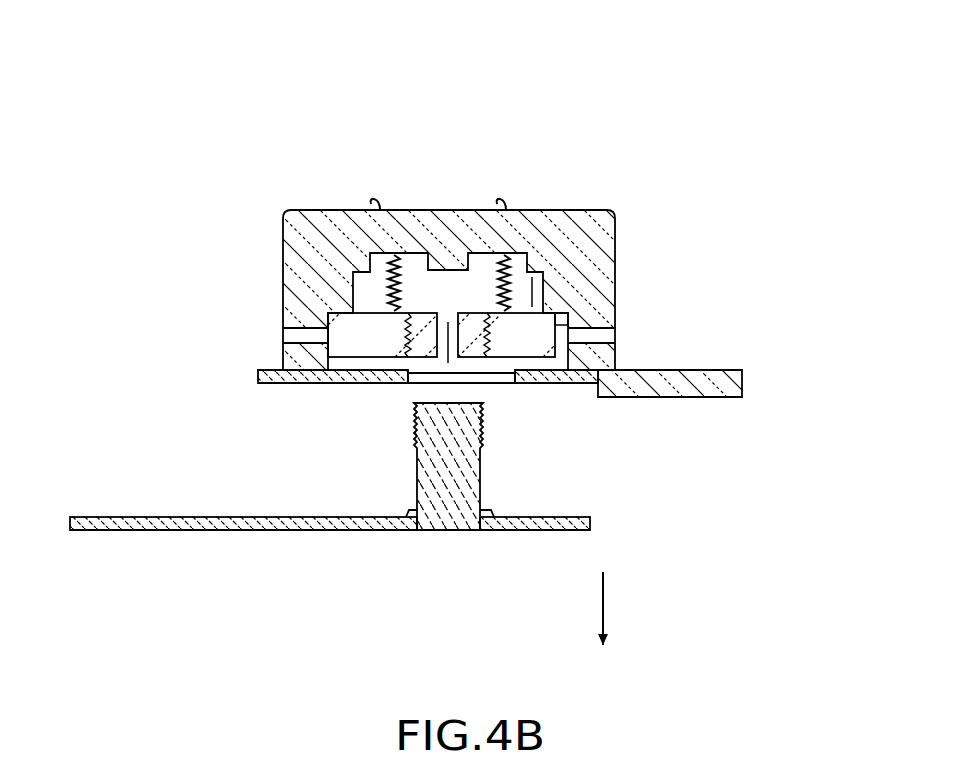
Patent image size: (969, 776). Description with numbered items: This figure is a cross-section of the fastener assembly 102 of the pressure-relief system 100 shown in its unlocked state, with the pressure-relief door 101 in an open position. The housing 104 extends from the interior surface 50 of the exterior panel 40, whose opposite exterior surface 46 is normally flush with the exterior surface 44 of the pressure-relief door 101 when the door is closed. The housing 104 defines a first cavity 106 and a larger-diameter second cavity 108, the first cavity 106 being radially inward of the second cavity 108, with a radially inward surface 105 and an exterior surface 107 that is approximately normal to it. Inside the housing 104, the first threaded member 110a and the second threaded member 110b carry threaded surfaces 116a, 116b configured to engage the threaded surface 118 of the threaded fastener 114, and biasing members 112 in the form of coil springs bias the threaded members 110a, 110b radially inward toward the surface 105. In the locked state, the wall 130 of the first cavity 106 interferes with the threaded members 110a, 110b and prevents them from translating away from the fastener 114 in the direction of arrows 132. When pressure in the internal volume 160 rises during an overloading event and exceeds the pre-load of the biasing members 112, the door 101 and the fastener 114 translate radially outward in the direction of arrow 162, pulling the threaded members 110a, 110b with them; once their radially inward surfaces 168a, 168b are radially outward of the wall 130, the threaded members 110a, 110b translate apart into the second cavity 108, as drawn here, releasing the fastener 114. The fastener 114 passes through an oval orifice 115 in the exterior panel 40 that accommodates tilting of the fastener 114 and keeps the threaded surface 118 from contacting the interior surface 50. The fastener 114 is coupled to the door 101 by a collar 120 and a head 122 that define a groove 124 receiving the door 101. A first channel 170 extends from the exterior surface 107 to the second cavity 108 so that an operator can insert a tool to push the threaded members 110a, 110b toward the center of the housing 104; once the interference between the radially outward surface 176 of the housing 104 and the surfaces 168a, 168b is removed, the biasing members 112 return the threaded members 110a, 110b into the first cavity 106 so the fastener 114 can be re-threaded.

The pressure-relief system 100 is at (168, 132).
The fastener assembly 102 is at (662, 176).
The housing 104 is at (594, 222).
The radially inward surface of housing 105 is at (302, 210).
The first cavity 106 is at (368, 297).
The exterior surface of housing 107 is at (615, 228).
The second cavity 108 is at (272, 316).
The first threaded member 110a is at (500, 346).
The second threaded member 110b is at (352, 346).
The biasing members 112 is at (387, 257).
The threaded fastener 114 is at (432, 481).
The orifice 115 is at (493, 380).
The threaded surface of first threaded member 116a is at (475, 326).
The threaded surface of second threaded member 116b is at (420, 326).
The threaded surface of fastener 118 is at (414, 432).
The collar 120 is at (485, 515).
The head 122 is at (478, 532).
The groove 124 is at (409, 531).
The wall of first cavity 130 is at (545, 312).
The arrows 132 is at (307, 335).
The internal volume 160 is at (150, 206).
The arrow 162 is at (603, 597).
The radially inward surface of first threaded member 168a is at (560, 318).
The radially inward surface of second threaded member 168b is at (383, 307).
The first channel 170 is at (294, 340).
The radially outward surface of housing 176 is at (613, 312).
The exterior panel 40 is at (722, 375).
The exterior surface of pressure-relief door 44 is at (160, 530).
The exterior surface of exterior panel 46 is at (693, 397).
The interior surface of exterior panel 50 is at (683, 370).
The pressure-relief door 101 is at (130, 517).